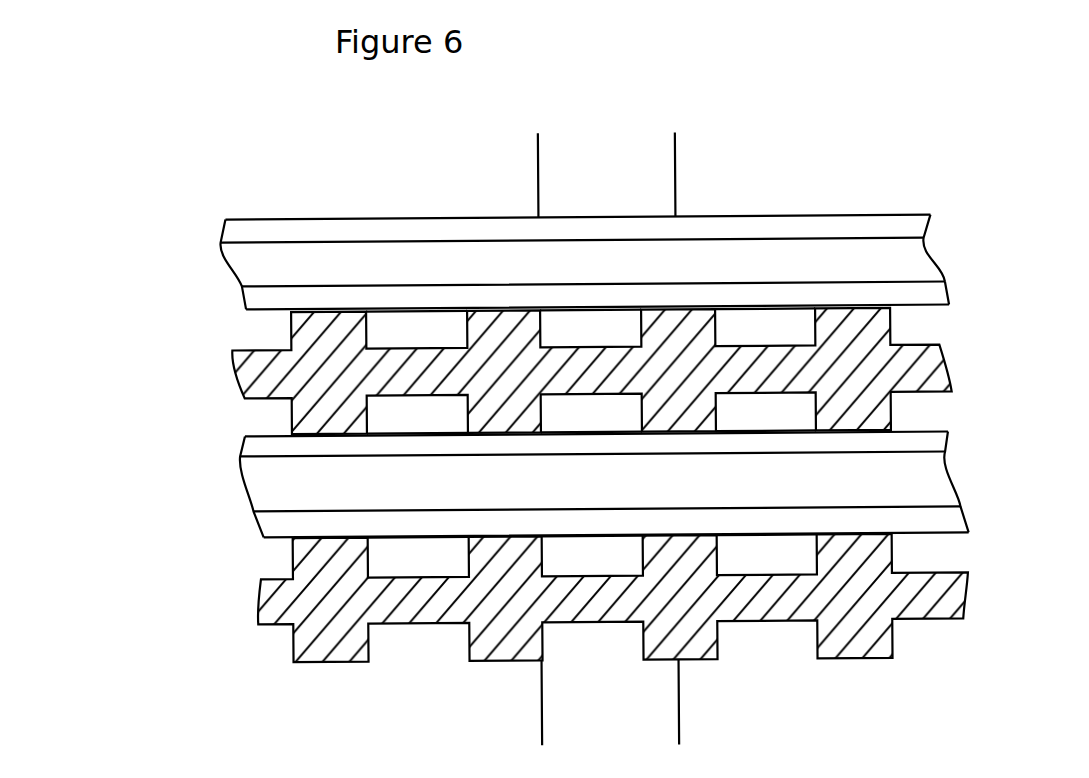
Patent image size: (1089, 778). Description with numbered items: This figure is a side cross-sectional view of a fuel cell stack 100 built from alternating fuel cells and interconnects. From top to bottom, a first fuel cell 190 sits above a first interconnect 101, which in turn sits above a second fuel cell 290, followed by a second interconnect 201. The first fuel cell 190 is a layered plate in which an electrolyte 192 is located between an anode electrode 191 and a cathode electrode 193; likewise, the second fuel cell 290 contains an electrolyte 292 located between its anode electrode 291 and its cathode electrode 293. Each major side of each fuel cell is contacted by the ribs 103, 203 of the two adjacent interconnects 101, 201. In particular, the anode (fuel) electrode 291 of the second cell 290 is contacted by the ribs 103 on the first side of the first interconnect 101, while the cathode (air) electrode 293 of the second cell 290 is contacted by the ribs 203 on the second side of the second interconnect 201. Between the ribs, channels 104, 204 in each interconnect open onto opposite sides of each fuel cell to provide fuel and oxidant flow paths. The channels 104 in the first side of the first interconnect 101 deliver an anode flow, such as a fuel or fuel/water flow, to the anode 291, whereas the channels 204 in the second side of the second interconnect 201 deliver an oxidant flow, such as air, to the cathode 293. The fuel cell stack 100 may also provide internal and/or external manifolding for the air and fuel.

The fuel cell stack 100 is at (933, 159).
The first fuel cell 190 is at (975, 213).
The anode electrode 191 is at (230, 232).
The electrolyte 192 is at (213, 264).
The cathode electrode 193 is at (242, 300).
The first interconnect 101 is at (975, 322).
The ribs 103 is at (292, 335).
The channels 104 is at (591, 370).
The second fuel cell 290 is at (980, 437).
The anode electrode 291 is at (231, 453).
The electrolyte 292 is at (217, 488).
The cathode electrode 293 is at (255, 524).
The second interconnect 201 is at (983, 548).
The ribs 203 is at (292, 563).
The channels 204 is at (593, 595).